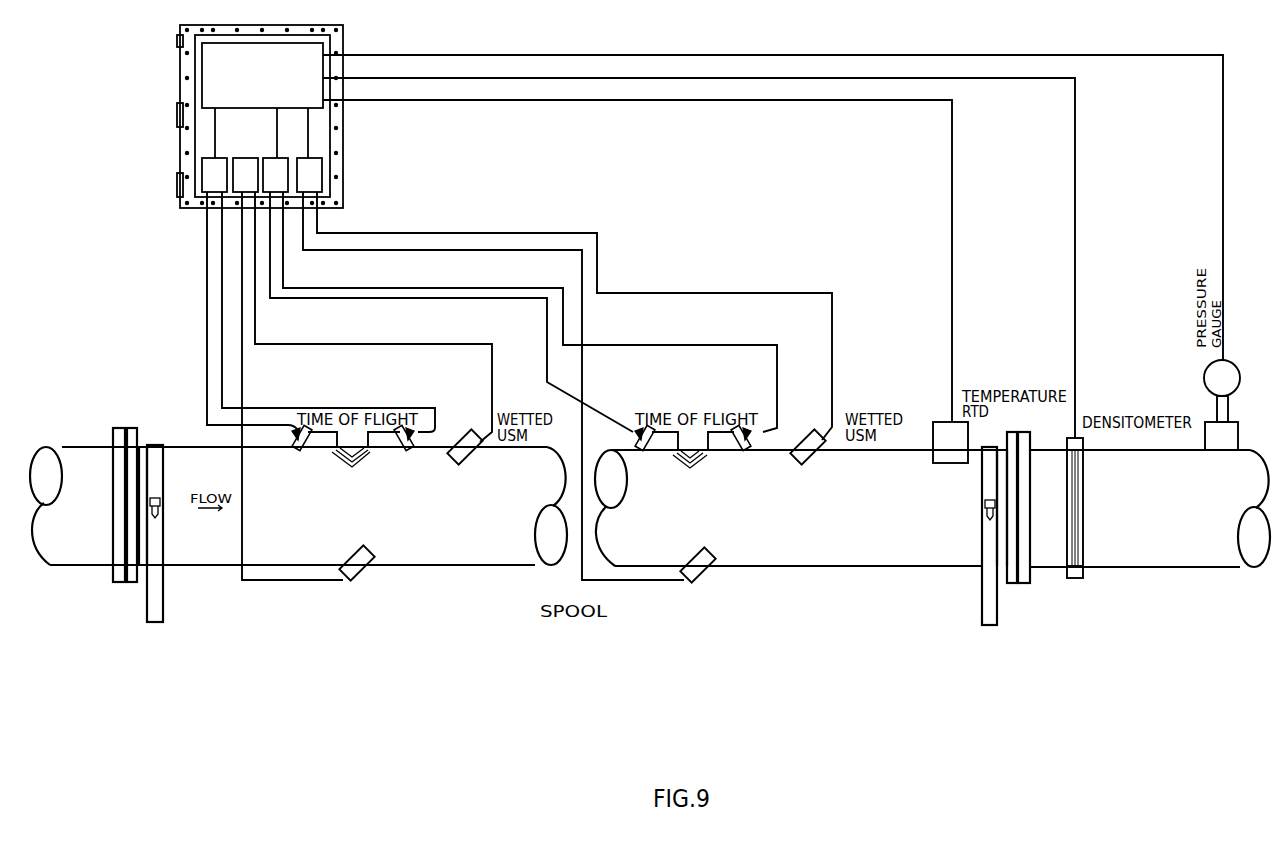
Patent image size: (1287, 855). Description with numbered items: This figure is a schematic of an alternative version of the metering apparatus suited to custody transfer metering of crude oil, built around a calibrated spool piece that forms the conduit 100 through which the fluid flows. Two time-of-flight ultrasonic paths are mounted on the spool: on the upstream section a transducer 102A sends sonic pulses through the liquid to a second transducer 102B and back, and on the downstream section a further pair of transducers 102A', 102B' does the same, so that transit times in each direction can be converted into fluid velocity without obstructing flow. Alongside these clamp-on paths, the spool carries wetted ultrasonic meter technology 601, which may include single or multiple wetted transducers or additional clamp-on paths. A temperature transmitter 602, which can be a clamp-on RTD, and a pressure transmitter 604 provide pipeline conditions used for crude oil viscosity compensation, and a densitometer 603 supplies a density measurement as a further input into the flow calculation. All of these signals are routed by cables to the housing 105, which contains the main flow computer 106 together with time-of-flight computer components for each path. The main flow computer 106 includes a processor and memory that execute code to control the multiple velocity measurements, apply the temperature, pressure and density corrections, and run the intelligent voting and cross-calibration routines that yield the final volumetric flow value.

The conduit 100 is at (407, 548).
The transducer 102A is at (280, 438).
The transducer 102B is at (427, 438).
The transducer 102A' is at (619, 438).
The transducer 102B' is at (768, 438).
The housing 105 is at (337, 117).
The main flow computer 106 is at (300, 103).
The USM technology 601 is at (803, 458).
The temperature transmitter 602 is at (942, 433).
The densitometer 603 is at (1078, 578).
The pressure transmitter 604 is at (1220, 380).